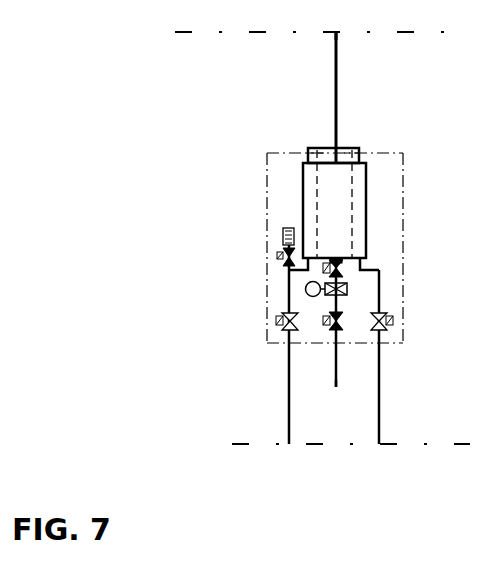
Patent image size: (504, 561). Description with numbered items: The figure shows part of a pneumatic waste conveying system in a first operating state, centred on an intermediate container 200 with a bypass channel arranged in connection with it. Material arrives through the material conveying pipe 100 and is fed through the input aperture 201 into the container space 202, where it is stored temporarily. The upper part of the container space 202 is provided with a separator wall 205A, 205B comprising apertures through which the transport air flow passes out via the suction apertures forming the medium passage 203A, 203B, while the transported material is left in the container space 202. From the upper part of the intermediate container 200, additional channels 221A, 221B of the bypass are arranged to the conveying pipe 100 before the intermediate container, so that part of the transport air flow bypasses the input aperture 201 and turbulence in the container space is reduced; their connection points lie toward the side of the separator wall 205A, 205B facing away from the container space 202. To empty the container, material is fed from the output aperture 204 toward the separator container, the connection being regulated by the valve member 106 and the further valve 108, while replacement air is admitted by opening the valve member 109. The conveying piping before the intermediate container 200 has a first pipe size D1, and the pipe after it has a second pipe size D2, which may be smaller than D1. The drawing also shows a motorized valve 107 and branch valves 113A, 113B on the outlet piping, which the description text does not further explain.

The material conveying pipe 100 is at (338, 95).
The intermediate container 200 is at (356, 197).
The input aperture 201 is at (338, 155).
The container space 202 is at (343, 215).
The medium passage 203A is at (304, 252).
The medium passage 203B is at (350, 263).
The output aperture 204 is at (342, 253).
The separator wall 205A is at (316, 207).
The separator wall 205B is at (503, 152).
The additional channel 221A is at (306, 158).
The additional channel 221B is at (363, 164).
The valve member 106 is at (323, 268).
The motorized valve 107 is at (348, 288).
The valve 108 is at (343, 316).
The valve member 109 is at (281, 254).
The first branch valve 113A is at (281, 331).
The second branch valve 113B is at (392, 324).
The first pipe size D1 is at (334, 84).
The second pipe size D2 is at (354, 366).